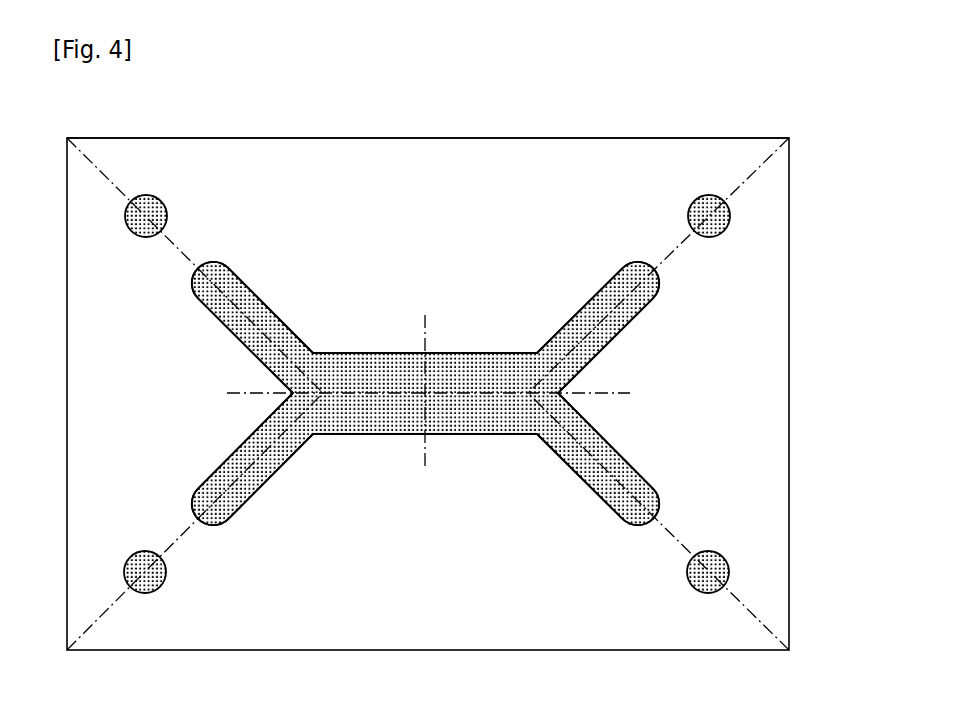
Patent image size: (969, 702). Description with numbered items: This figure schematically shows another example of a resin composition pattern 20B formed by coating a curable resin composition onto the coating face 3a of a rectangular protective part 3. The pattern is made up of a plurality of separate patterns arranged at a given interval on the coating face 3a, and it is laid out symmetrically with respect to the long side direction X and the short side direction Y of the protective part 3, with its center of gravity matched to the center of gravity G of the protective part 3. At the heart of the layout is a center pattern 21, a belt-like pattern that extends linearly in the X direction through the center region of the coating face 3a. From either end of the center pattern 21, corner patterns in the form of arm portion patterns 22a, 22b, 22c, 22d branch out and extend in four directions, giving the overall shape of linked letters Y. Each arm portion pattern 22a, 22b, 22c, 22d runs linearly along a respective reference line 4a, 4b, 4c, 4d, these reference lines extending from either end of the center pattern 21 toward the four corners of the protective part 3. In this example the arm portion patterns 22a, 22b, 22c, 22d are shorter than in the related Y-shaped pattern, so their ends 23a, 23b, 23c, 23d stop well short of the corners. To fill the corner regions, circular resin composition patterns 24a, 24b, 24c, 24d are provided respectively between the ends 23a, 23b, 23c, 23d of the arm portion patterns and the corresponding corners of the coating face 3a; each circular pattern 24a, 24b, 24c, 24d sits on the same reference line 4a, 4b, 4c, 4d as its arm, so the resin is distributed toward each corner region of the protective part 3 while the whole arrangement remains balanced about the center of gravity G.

The protective part 3 is at (345, 136).
The coating face 3a is at (456, 148).
The reference line 4a is at (117, 190).
The reference line 4b is at (108, 603).
The reference line 4c is at (734, 190).
The reference line 4d is at (738, 604).
The resin composition pattern 20B is at (518, 435).
The center pattern 21 is at (462, 355).
The arm portion pattern 22a is at (268, 302).
The arm portion pattern 22b is at (264, 487).
The arm portion pattern 22c is at (596, 302).
The arm portion pattern 22d is at (588, 487).
The end of arm portion pattern 23a is at (213, 263).
The end of arm portion pattern 23b is at (213, 526).
The end of arm portion pattern 23c is at (639, 263).
The end of arm portion pattern 23d is at (641, 526).
The circular resin composition pattern 24a is at (148, 238).
The circular resin composition pattern 24b is at (147, 551).
The circular resin composition pattern 24c is at (709, 238).
The circular resin composition pattern 24d is at (708, 551).
The X direction X is at (618, 392).
The Y direction Y is at (426, 326).
The center of gravity G is at (405, 393).